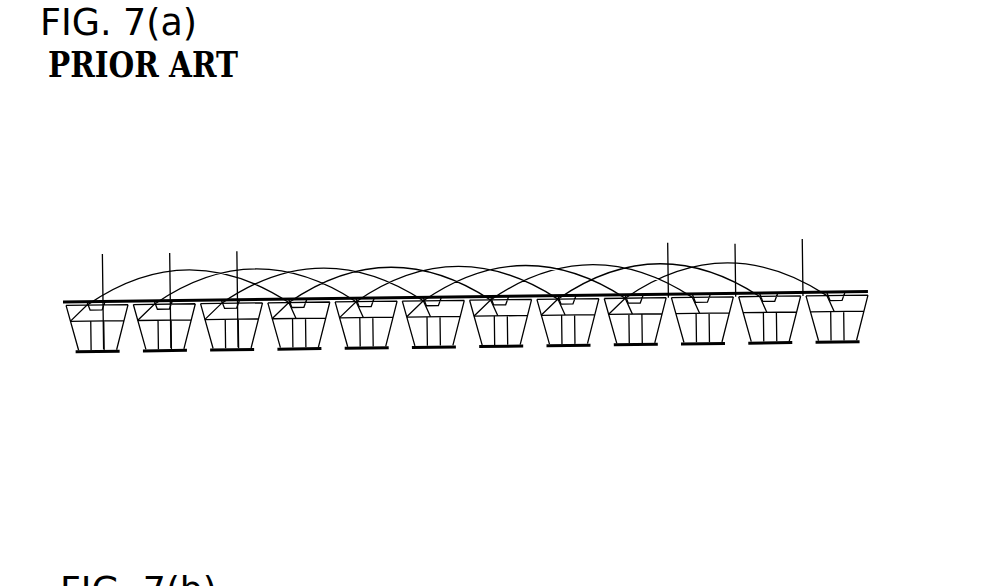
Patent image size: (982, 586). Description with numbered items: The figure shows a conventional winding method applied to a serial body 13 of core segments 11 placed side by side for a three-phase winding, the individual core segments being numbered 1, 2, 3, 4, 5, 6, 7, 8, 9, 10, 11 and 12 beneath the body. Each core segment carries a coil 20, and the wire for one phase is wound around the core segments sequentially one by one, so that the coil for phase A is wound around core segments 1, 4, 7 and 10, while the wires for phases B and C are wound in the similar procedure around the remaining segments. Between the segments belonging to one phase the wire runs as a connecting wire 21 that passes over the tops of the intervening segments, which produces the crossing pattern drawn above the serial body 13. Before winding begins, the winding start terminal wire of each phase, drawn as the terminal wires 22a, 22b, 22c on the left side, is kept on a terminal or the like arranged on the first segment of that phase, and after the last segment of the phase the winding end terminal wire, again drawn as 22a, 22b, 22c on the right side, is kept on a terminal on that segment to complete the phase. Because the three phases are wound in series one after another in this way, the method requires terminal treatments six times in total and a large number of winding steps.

The serial body of core segments 13 is at (457, 275).
The core segment 11 is at (452, 311).
The coil 20 is at (382, 334).
The crossover connecting wire 21 is at (315, 271).
The terminal wire 22a is at (102, 266).
The terminal wire 22b is at (170, 265).
The terminal wire 22c is at (238, 267).
The No. 1 core segment 1 is at (97, 349).
The No. 2 core segment 2 is at (164, 348).
The No. 3 core segment 3 is at (231, 347).
The No. 4 core segment 4 is at (299, 346).
The No. 5 core segment 5 is at (365, 291).
The No. 6 core segment 6 is at (433, 291).
The No. 7 core segment 7 is at (501, 343).
The No. 8 core segment 8 is at (568, 343).
The No. 9 core segment 9 is at (635, 342).
The No. 10 core segment 10 is at (702, 341).
The No. 12 core segment 12 is at (837, 339).